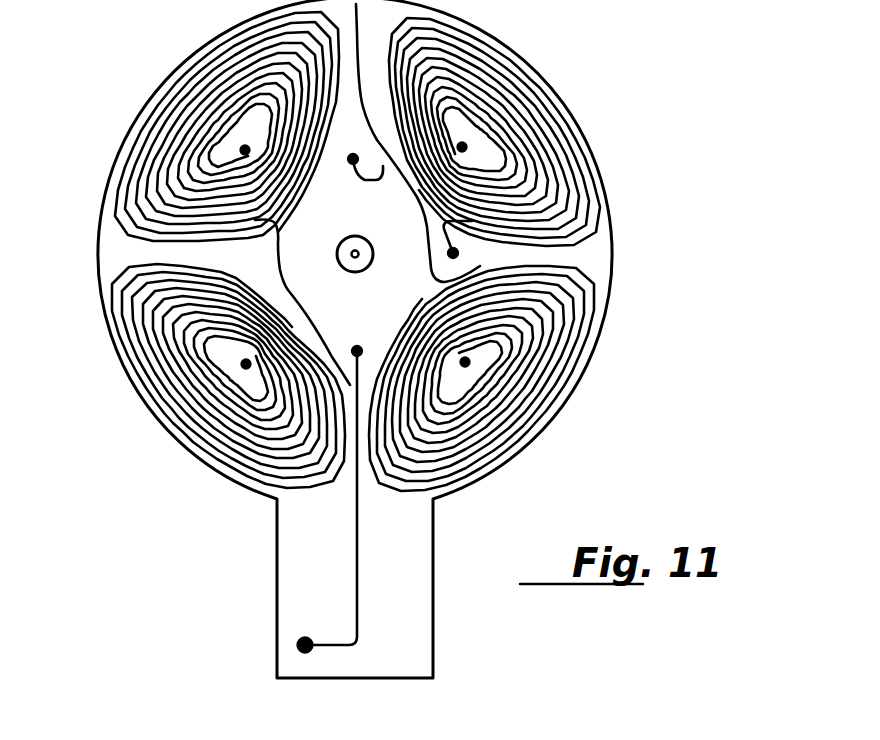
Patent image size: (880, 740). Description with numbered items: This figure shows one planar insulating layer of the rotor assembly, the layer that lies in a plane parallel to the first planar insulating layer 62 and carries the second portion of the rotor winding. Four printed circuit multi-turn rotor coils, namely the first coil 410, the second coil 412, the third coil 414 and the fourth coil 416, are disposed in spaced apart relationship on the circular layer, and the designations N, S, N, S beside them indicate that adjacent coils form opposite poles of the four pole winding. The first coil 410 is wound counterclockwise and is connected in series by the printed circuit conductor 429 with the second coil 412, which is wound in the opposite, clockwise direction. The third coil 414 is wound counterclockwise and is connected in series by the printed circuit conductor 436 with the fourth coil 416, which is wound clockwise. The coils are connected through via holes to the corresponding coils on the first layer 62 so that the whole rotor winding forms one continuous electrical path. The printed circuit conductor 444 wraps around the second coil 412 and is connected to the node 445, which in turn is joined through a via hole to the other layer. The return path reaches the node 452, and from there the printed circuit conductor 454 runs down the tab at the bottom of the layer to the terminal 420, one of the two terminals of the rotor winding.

The first planar insulating layer 62 is at (605, 207).
The first coil 410 is at (568, 388).
The second coil 412 is at (582, 152).
The third coil 414 is at (120, 150).
The fourth coil 416 is at (142, 392).
The terminal 420 is at (297, 645).
The printed circuit conductor 429 is at (430, 242).
The printed circuit conductor 436 is at (279, 265).
The printed circuit conductor 444 is at (364, 183).
The node 445 is at (460, 253).
The node 452 is at (360, 343).
The printed circuit conductor 454 is at (357, 544).